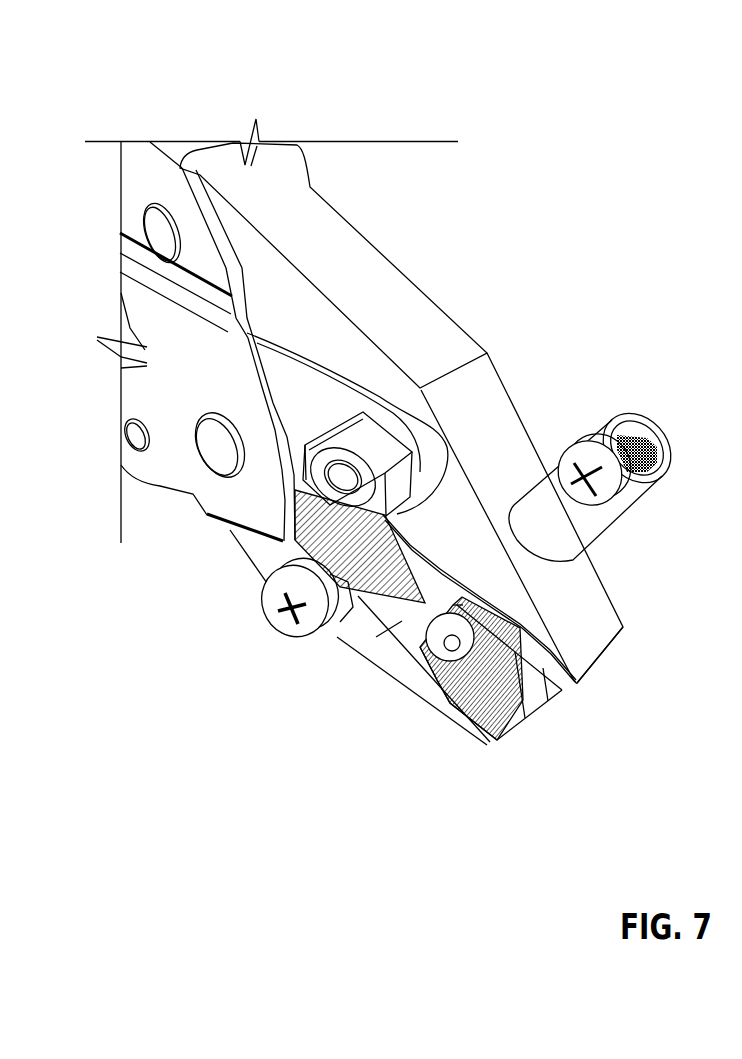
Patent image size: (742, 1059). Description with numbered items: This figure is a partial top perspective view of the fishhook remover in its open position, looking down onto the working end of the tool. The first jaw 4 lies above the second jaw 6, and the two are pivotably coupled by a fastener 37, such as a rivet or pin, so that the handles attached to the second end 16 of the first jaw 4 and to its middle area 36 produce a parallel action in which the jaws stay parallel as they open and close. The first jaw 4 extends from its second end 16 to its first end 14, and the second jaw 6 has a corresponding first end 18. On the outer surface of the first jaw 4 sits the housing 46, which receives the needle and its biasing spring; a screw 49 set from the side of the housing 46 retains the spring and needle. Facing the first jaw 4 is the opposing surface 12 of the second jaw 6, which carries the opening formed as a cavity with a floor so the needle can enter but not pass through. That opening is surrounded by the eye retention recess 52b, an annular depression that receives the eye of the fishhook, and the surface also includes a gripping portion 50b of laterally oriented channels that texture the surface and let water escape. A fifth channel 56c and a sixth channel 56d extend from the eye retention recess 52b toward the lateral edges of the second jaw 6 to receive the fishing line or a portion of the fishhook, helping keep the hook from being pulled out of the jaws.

The first jaw 4 is at (492, 440).
The second jaw 6 is at (353, 640).
The opposing surface 12 is at (470, 700).
The first end 14 is at (600, 635).
The second end 16 is at (258, 160).
The first end 18 is at (510, 728).
The middle area 36 is at (405, 330).
The fastener 37 is at (213, 447).
The housing 46 is at (593, 523).
The screw 49 is at (605, 478).
The gripping portion 50b is at (460, 655).
The eye retention recess 52b is at (563, 700).
The fifth channel 56c is at (580, 683).
The sixth channel 56d is at (376, 637).